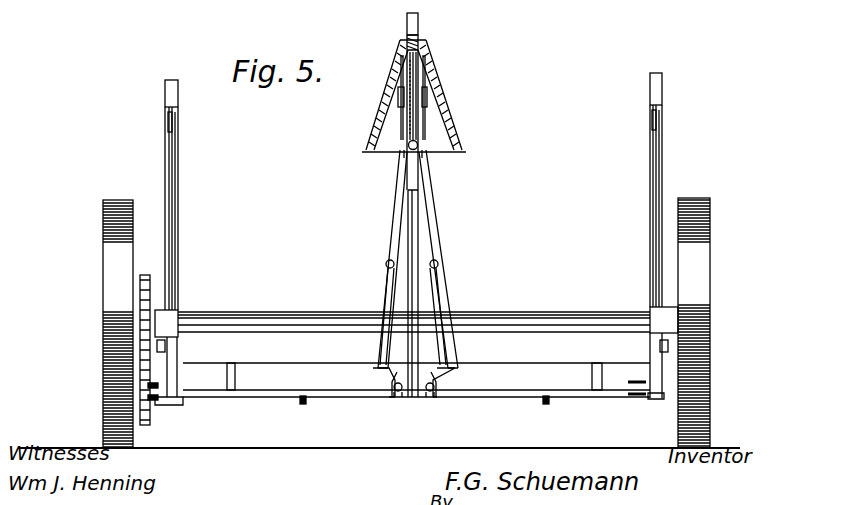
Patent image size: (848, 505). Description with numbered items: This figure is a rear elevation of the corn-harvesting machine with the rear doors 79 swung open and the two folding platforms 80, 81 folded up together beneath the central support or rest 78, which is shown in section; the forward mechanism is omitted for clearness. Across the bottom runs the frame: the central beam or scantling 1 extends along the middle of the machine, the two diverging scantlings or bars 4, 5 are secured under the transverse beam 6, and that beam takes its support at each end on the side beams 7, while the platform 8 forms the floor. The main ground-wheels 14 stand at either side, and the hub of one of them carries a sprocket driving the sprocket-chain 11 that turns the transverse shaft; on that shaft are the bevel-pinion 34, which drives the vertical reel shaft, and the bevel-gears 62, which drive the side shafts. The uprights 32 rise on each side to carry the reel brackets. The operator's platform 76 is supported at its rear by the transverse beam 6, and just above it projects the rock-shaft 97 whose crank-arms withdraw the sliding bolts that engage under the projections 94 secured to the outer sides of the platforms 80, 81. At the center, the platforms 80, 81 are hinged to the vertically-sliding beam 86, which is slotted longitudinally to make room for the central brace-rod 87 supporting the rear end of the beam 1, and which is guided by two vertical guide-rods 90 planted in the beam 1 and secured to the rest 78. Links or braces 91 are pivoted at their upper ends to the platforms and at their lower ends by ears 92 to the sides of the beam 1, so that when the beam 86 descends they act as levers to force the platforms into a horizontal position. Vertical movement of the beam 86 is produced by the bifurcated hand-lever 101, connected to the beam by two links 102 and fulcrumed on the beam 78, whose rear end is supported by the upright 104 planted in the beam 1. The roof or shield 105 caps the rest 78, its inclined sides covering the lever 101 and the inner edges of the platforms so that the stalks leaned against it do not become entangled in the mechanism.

The beam or scantling 1 is at (388, 396).
The scantling or bar 4 is at (587, 378).
The scantling or bar 5 is at (243, 380).
The transverse beam 6 is at (620, 350).
The side beam 7 is at (178, 375).
The platform 8 is at (482, 400).
The sprocket-chain 11 is at (103, 354).
The main ground-wheel 14 is at (110, 264).
The upright 32 is at (166, 98).
The bevel-pinion 34 is at (150, 388).
The bevel-gear 62 is at (302, 402).
The operator's platform 76 is at (502, 322).
The central support or rest 78 is at (418, 25).
The door 79 is at (174, 192).
The folding platform 80 is at (395, 238).
The folding platform 81 is at (446, 259).
The vertically-sliding beam 86 is at (407, 153).
The central brace-rod 87 is at (420, 46).
The vertical guide-rod 90 is at (418, 70).
The link or brace 91 is at (386, 298).
The ear 92 is at (428, 392).
The projection 94 is at (395, 380).
The rock-shaft 97 is at (518, 315).
The hand-lever 101 is at (428, 95).
The link 102 is at (418, 117).
The upright 104 is at (414, 211).
The roof or shield 105 is at (366, 152).